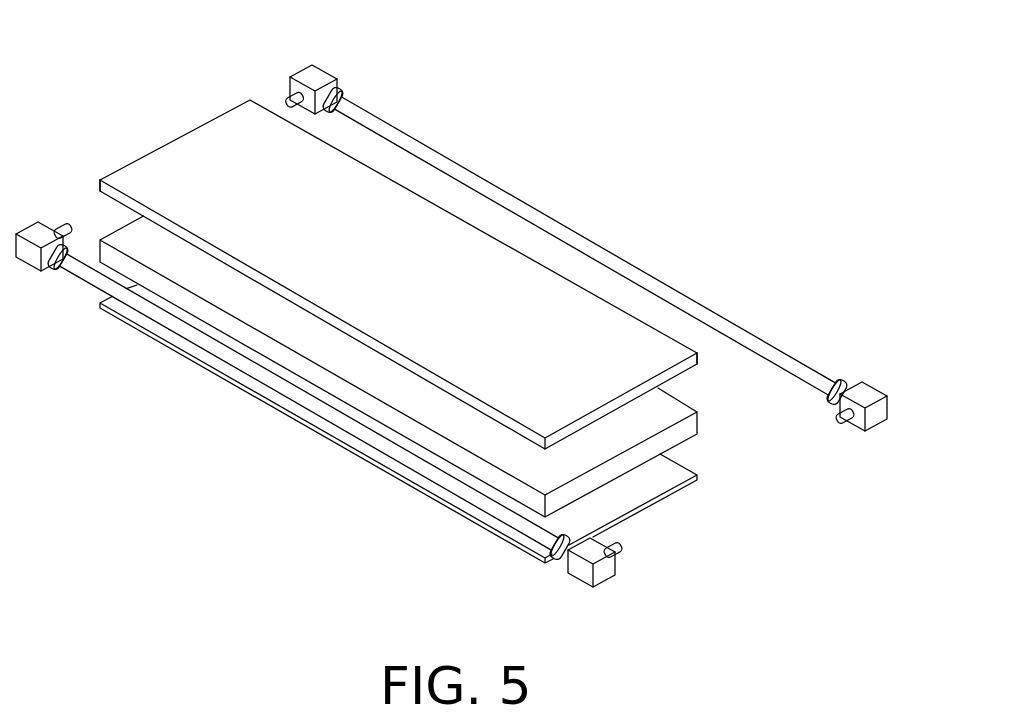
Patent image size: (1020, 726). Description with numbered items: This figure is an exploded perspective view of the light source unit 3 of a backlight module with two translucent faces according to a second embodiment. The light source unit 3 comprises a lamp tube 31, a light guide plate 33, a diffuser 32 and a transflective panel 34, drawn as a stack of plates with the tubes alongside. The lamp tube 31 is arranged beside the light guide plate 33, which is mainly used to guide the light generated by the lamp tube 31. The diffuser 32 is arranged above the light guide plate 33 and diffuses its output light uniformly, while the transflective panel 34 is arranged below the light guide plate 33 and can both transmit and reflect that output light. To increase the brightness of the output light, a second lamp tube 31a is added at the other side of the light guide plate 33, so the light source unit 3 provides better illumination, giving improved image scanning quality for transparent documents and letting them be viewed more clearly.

The light source unit 3 is at (145, 113).
The lamp tube 31 is at (602, 568).
The lamp tube 31a is at (875, 418).
The diffuser 32 is at (698, 354).
The light guide plate 33 is at (688, 428).
The transflective panel 34 is at (688, 477).